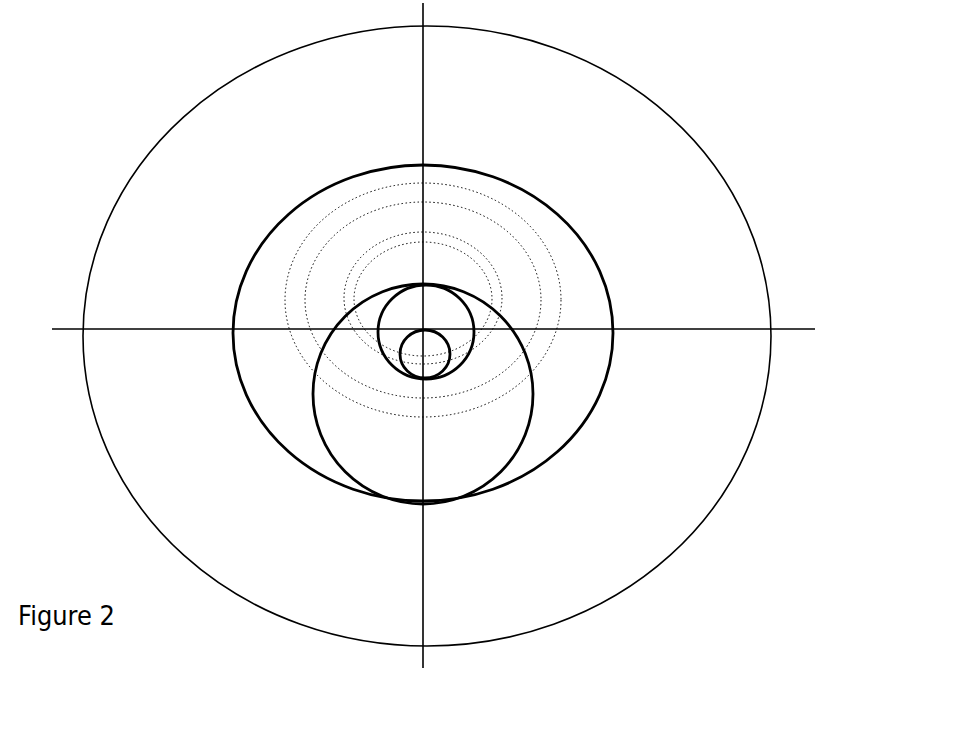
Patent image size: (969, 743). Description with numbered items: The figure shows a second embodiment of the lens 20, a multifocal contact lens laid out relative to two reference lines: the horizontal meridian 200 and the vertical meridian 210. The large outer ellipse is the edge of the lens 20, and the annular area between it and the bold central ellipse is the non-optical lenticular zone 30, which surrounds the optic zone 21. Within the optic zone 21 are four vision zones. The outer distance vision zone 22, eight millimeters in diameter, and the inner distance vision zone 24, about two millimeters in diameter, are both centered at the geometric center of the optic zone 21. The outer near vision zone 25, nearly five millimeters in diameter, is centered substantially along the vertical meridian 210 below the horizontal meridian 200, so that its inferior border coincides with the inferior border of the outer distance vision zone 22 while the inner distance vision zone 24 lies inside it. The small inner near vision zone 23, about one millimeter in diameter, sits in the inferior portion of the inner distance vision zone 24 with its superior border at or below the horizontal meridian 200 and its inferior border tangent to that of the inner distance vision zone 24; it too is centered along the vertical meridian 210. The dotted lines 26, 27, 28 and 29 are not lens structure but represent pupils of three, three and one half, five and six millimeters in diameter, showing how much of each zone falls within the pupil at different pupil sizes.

The lens 20 is at (738, 509).
The horizontal meridian 200 is at (796, 336).
The vertical meridian 210 is at (436, 19).
The optic zone 21 is at (617, 309).
The outer distance vision zone 22 is at (525, 333).
The inner near vision zone 23 is at (442, 360).
The inner distance vision zone 24 is at (433, 315).
The outer near vision zone 25 is at (457, 465).
The dotted line 26 is at (452, 244).
The dotted line 27 is at (474, 244).
The dotted line 28 is at (535, 280).
The dotted line 29 is at (563, 294).
The non-optical lenticular zone 30 is at (642, 523).